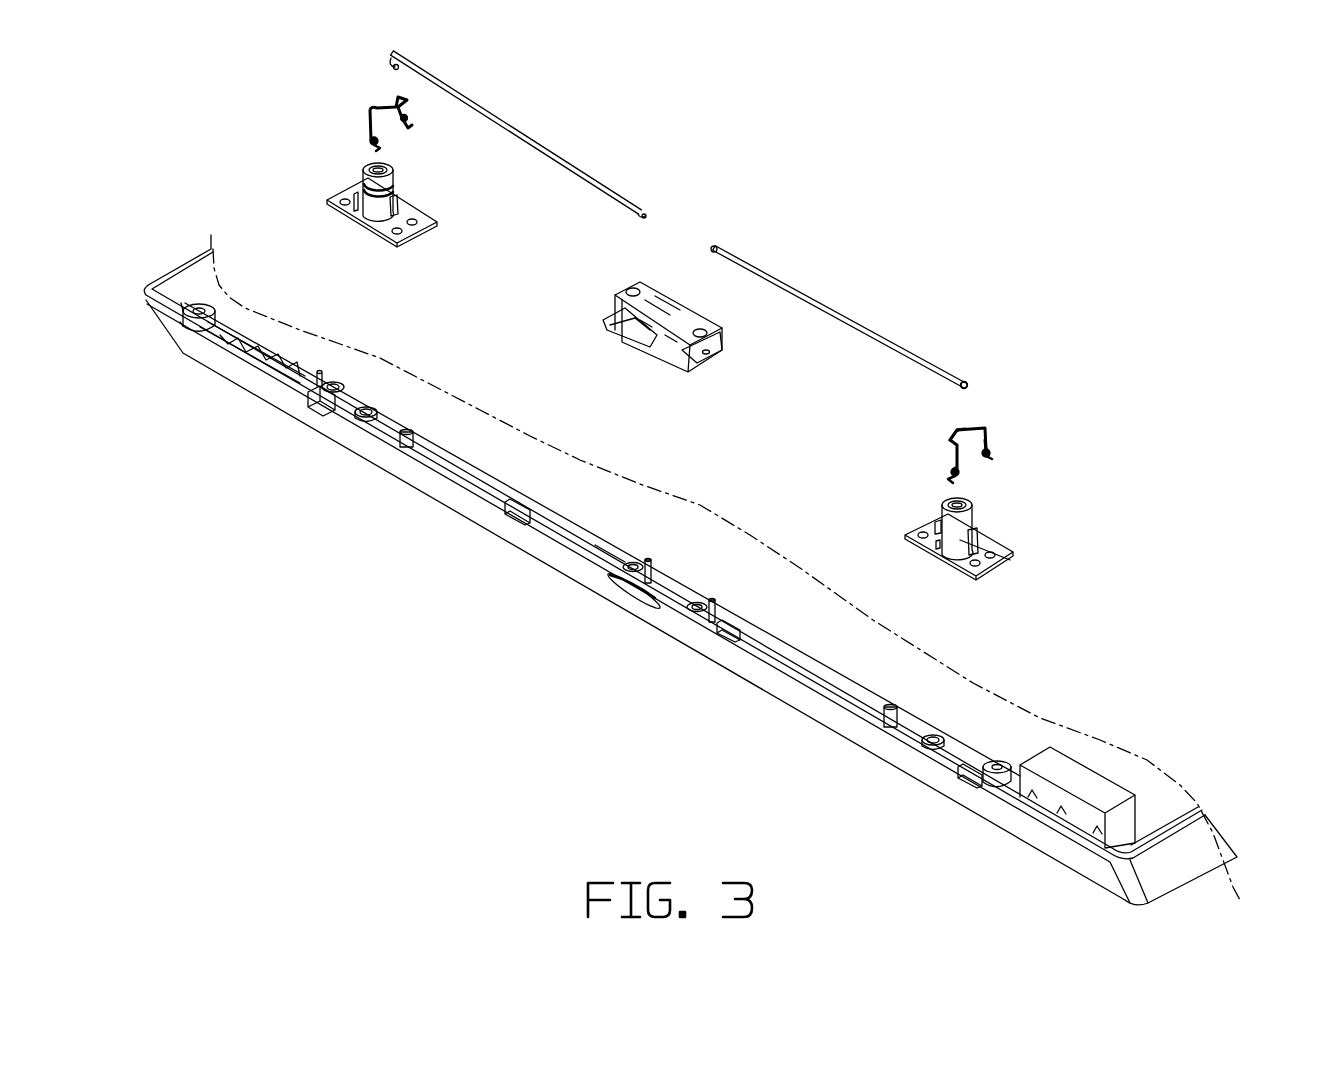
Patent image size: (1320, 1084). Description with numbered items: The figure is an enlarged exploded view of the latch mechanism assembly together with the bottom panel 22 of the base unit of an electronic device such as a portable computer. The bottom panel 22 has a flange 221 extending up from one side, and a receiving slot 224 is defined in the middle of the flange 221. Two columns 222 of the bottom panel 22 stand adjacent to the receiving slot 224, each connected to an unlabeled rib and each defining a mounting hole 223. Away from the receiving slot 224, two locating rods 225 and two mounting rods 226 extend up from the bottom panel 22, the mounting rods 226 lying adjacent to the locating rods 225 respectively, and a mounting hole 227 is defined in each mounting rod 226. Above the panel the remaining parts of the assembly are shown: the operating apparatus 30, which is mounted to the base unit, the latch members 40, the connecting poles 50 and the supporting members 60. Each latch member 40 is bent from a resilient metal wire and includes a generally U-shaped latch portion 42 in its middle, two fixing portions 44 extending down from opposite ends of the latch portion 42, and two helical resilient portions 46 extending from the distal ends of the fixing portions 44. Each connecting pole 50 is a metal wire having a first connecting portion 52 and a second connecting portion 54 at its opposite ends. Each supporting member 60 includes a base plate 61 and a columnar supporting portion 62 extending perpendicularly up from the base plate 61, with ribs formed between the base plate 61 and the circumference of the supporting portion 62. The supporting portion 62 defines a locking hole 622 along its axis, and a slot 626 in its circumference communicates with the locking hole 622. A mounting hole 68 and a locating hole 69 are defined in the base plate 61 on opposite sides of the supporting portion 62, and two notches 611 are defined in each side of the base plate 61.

The bottom panel 22 is at (1122, 770).
The flange 221 is at (775, 680).
The columns 222 is at (615, 567).
The mounting hole 223 is at (612, 558).
The receiving slot 224 is at (643, 603).
The locating rods 225 is at (398, 447).
The mounting rods 226 is at (350, 417).
The mounting hole 227 is at (325, 410).
The operating apparatus 30 is at (683, 386).
The latch member 40 is at (977, 424).
The latch portion 42 is at (957, 428).
The fixing portions 44 is at (991, 460).
The resilient portions 46 is at (992, 448).
The connecting pole 50 is at (813, 290).
The first connecting portion 52 is at (716, 246).
The second connecting portion 54 is at (968, 387).
The supporting member 60 is at (1018, 567).
The base plate 61 is at (998, 550).
The notches 611 is at (950, 567).
The supporting portion 62 is at (973, 510).
The locking hole 622 is at (377, 166).
The slot 626 is at (393, 190).
The mounting hole 68 is at (405, 228).
The locating hole 69 is at (342, 190).